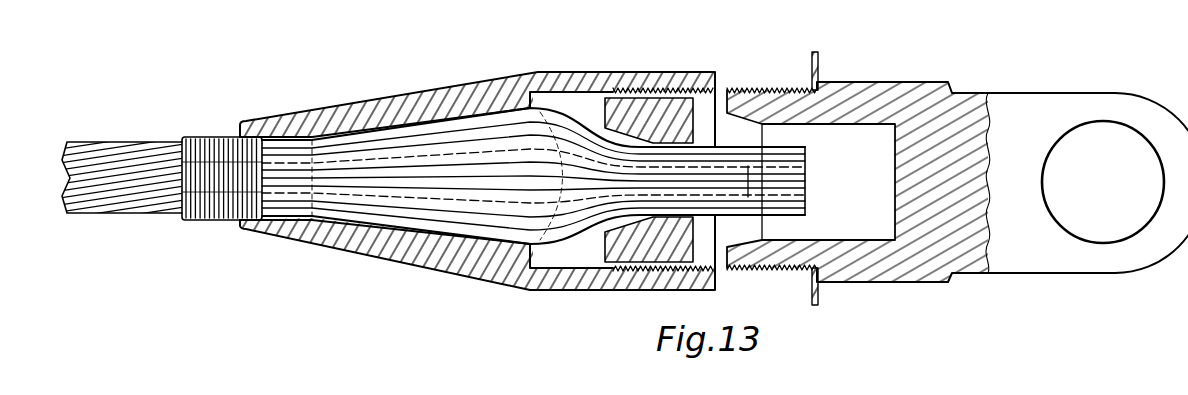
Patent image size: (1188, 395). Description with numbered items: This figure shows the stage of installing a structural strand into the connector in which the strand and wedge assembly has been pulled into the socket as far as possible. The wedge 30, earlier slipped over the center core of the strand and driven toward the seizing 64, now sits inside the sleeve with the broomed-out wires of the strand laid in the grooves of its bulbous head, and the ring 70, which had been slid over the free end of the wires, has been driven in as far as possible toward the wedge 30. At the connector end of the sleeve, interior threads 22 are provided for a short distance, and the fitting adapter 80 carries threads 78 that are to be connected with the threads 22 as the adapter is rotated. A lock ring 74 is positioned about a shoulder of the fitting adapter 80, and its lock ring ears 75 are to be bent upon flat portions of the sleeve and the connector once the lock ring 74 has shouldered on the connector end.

The interior threads 22 is at (708, 95).
The wedge 30 is at (403, 135).
The seizing 64 is at (215, 160).
The ring 70 is at (652, 247).
The lock ring 74 is at (825, 160).
The lock ring ears 75 is at (820, 62).
The threads 78 is at (748, 88).
The fitting adapter 80 is at (900, 87).